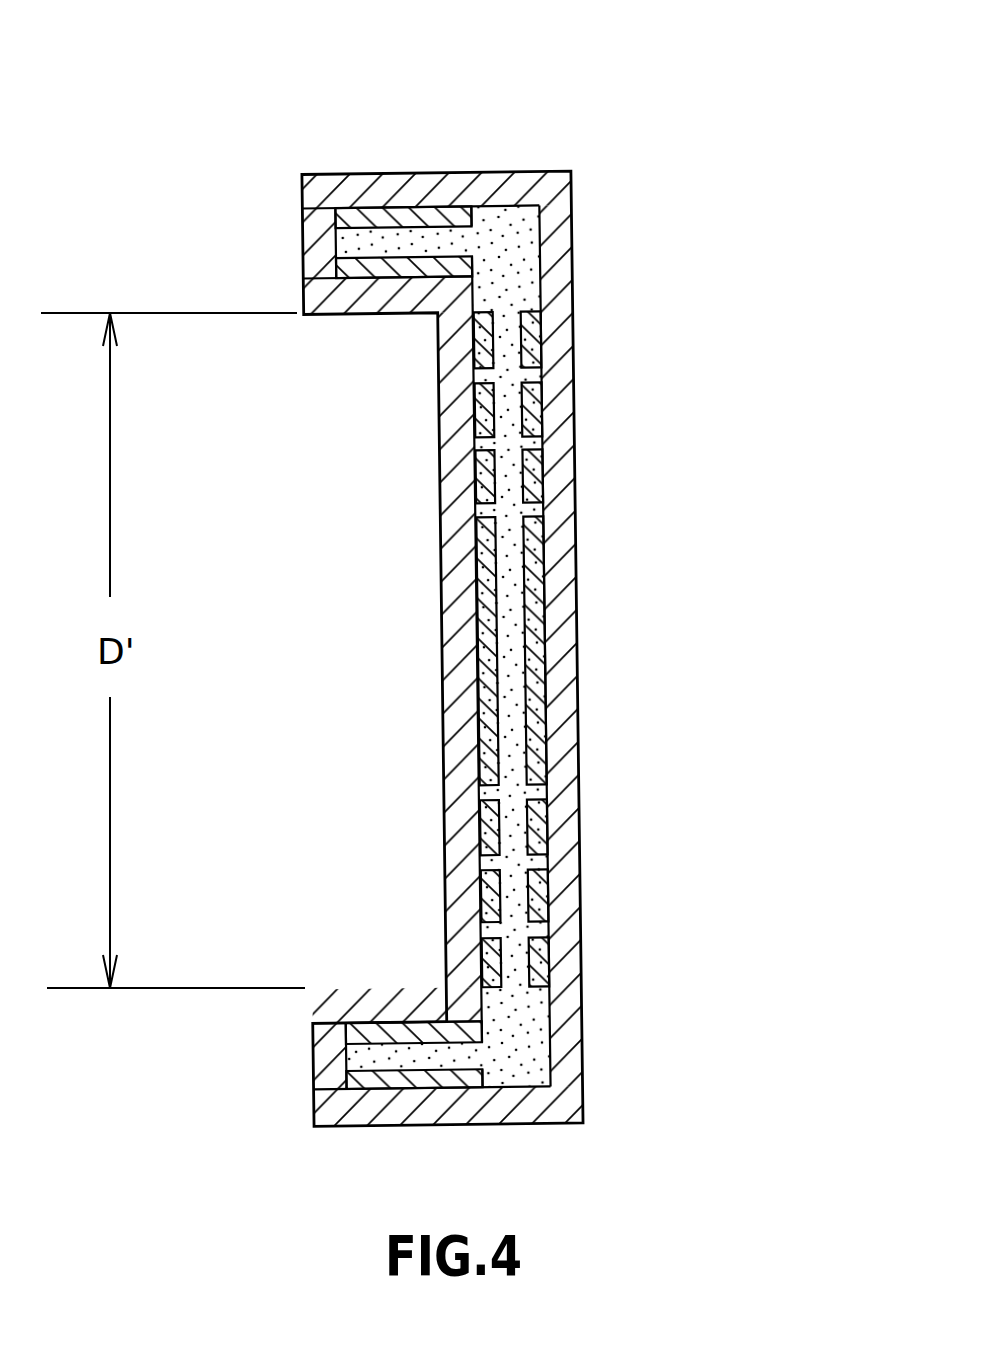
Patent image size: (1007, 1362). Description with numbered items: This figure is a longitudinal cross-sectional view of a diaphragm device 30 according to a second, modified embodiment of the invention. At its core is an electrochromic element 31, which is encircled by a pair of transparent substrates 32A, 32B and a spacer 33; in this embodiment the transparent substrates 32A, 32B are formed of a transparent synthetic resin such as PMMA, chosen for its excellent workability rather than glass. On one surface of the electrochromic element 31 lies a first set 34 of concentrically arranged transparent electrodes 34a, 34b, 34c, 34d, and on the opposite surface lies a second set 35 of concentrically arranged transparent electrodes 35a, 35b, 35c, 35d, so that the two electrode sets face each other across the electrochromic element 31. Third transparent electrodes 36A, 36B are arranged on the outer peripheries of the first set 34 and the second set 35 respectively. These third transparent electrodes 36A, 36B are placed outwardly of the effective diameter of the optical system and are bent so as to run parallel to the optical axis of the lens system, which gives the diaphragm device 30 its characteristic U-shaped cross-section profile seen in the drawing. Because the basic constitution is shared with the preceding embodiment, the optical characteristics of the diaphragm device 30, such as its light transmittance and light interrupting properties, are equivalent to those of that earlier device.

The diaphragm device 30 is at (630, 98).
The electrochromic element 31 is at (525, 248).
The transparent substrate 32A is at (313, 295).
The transparent substrate 32B is at (325, 180).
The spacer 33 is at (312, 243).
The first set of concentrically arranged transparent electrodes 34 is at (317, 430).
The transparent electrode 34a is at (480, 580).
The transparent electrode 34b is at (483, 485).
The transparent electrode 34c is at (483, 417).
The transparent electrode 34d is at (483, 350).
The second set of concentrically arranged transparent electrodes 35 is at (703, 345).
The transparent electrode 35a is at (532, 566).
The transparent electrode 35b is at (528, 477).
The transparent electrode 35c is at (528, 417).
The transparent electrode 35d is at (528, 348).
The third transparent electrode 36A is at (378, 270).
The third transparent electrode 36B is at (385, 217).